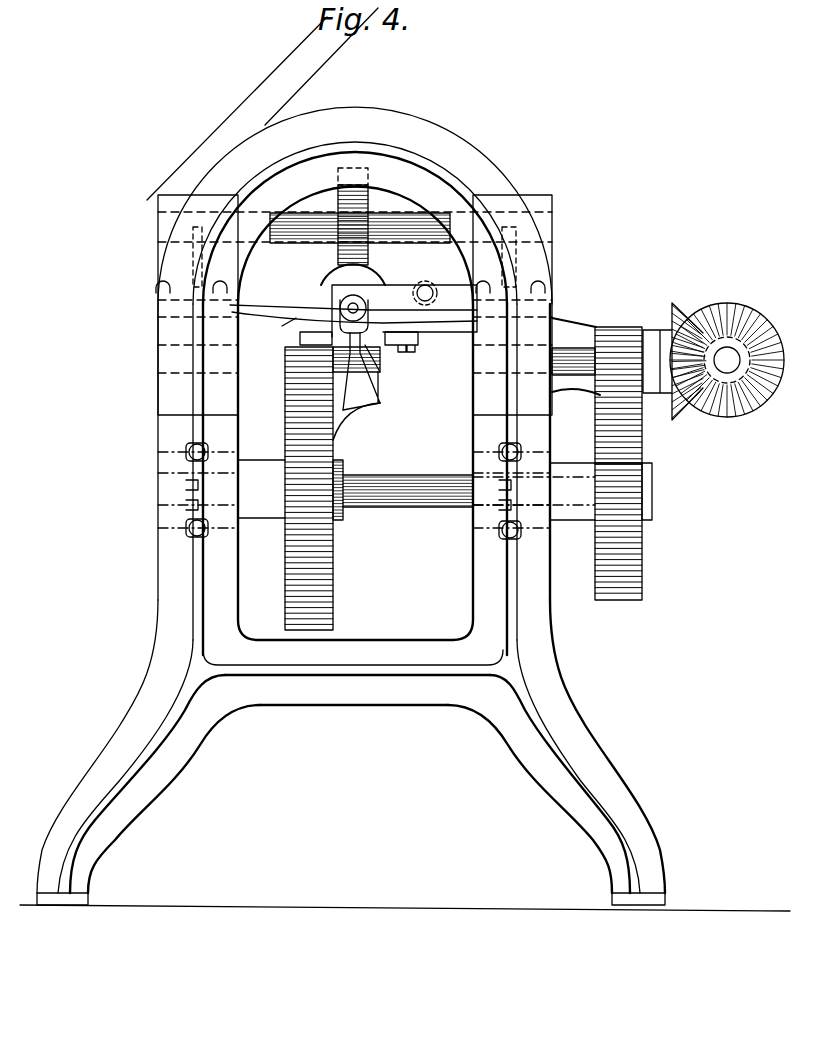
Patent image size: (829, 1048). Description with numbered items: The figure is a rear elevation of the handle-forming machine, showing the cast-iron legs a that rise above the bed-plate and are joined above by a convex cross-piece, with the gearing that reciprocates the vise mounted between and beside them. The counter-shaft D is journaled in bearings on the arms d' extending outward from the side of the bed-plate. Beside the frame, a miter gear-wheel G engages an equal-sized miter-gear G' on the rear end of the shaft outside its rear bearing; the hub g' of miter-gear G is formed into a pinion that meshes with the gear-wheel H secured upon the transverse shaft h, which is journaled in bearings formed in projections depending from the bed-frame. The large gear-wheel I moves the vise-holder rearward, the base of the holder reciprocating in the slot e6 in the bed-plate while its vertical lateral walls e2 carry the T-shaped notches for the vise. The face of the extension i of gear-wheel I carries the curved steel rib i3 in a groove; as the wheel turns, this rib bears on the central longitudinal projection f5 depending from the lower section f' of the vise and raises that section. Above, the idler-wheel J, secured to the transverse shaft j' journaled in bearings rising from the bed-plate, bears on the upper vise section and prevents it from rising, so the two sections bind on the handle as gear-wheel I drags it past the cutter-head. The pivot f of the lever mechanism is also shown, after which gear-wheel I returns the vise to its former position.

The front legs a is at (152, 688).
The transverse shaft j' is at (348, 305).
The idler-wheel J is at (345, 226).
The lever pivot f is at (353, 309).
The lower section f' is at (284, 329).
The slot e6 is at (300, 338).
The vertical lateral walls e2 is at (356, 375).
The extension i is at (370, 412).
The curved steel rib i3 is at (380, 402).
The central longitudinal projection f5 is at (372, 365).
The gear-wheel I is at (283, 413).
The transverse shaft h is at (430, 492).
The arms d' is at (582, 342).
The hub g' is at (621, 376).
The gear-wheel H is at (643, 567).
The miter gear-wheel G is at (674, 346).
The miter-gear G' is at (727, 348).
The counter-shaft D is at (730, 365).